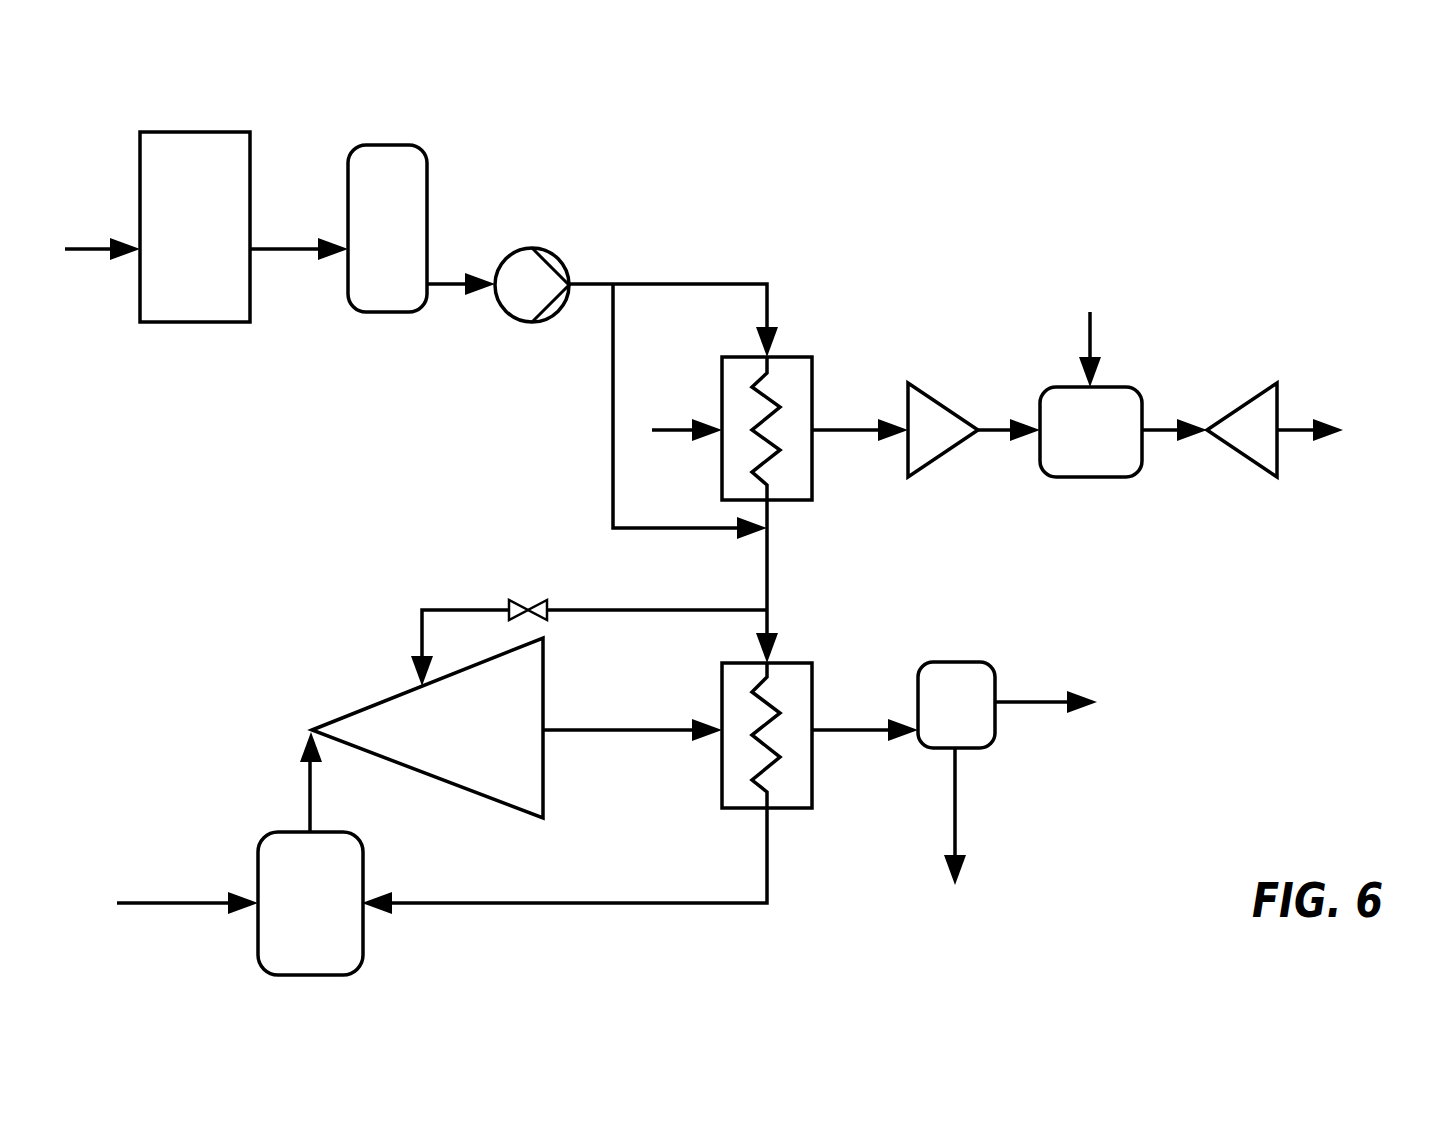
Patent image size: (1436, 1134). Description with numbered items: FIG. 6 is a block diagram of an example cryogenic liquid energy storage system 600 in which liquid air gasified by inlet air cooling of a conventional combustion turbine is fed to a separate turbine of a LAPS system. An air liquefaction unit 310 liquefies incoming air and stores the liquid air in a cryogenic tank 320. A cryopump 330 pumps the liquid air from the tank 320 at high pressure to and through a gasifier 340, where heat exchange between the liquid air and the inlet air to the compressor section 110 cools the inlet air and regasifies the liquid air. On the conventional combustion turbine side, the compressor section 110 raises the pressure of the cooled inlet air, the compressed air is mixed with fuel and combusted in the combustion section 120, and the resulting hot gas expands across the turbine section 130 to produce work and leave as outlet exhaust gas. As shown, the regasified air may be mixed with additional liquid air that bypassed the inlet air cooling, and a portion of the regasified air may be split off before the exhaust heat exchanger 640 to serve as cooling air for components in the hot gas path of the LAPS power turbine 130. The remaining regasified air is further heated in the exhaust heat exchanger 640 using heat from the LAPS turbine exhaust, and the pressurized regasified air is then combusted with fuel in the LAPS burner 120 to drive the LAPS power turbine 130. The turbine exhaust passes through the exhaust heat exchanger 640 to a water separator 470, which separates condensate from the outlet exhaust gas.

The cryogenic liquid energy storage system 600 is at (1182, 126).
The air liquefaction unit 310 is at (140, 180).
The tank 320 is at (348, 180).
The cryopump 330 is at (505, 312).
The gasifier 340 is at (725, 357).
The compressor section 110 is at (908, 442).
The combustion section 120 is at (1040, 442).
The turbine section 130 is at (1224, 444).
The exhaust heat exchanger 640 is at (722, 760).
The water separator 470 is at (943, 662).